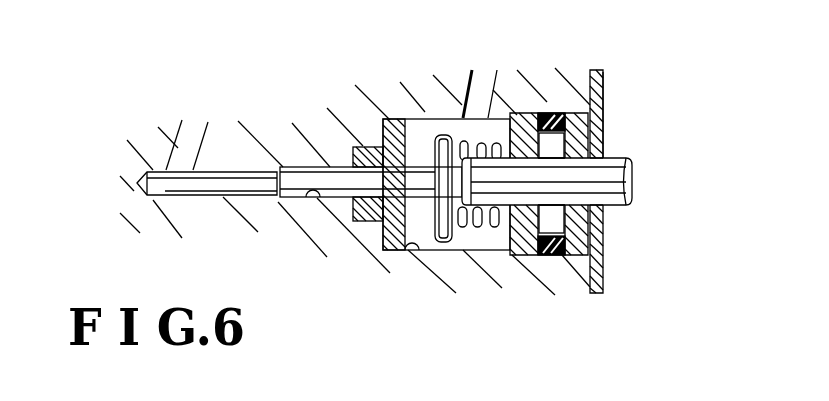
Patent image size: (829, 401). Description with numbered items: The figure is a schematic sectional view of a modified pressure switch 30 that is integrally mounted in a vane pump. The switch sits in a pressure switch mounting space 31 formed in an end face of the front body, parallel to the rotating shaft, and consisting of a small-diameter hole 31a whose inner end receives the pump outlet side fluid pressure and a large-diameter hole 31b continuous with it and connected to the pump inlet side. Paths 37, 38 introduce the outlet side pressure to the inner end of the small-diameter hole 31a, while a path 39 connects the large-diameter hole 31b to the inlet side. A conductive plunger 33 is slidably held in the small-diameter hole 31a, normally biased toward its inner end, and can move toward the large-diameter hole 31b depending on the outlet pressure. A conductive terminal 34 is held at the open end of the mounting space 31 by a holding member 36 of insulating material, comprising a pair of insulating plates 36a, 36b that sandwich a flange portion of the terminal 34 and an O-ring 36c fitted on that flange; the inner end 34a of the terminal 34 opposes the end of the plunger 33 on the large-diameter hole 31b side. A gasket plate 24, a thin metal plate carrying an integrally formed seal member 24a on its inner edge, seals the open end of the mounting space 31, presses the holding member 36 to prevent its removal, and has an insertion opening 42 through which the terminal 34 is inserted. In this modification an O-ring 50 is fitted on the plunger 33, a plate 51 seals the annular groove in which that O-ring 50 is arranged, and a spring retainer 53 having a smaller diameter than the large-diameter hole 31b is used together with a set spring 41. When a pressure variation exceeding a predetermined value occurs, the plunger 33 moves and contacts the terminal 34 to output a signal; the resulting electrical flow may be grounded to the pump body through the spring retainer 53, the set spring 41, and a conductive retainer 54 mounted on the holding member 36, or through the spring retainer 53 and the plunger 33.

The gasket plate 24 is at (642, 176).
The seal member 24a is at (603, 83).
The pressure switch 30 is at (347, 98).
The pressure switch mounting space 31 is at (353, 287).
The small-diameter hole 31a is at (320, 198).
The large-diameter hole 31b is at (403, 250).
The plunger 33 is at (297, 167).
The terminal 34 is at (612, 173).
The inner end of the terminal 34a is at (467, 240).
The holding member 36 is at (596, 130).
The plate 36a is at (527, 113).
The plate 36b is at (592, 126).
The O-ring 36c is at (550, 113).
The path 37 is at (187, 143).
The path 38 is at (215, 192).
The path 39 is at (478, 92).
The set spring 41 is at (493, 230).
The insertion opening 42 is at (598, 215).
The O-ring 50 is at (362, 147).
The plate 51 is at (389, 119).
The spring retainer 53 is at (423, 119).
The conductive retainer 54 is at (506, 256).